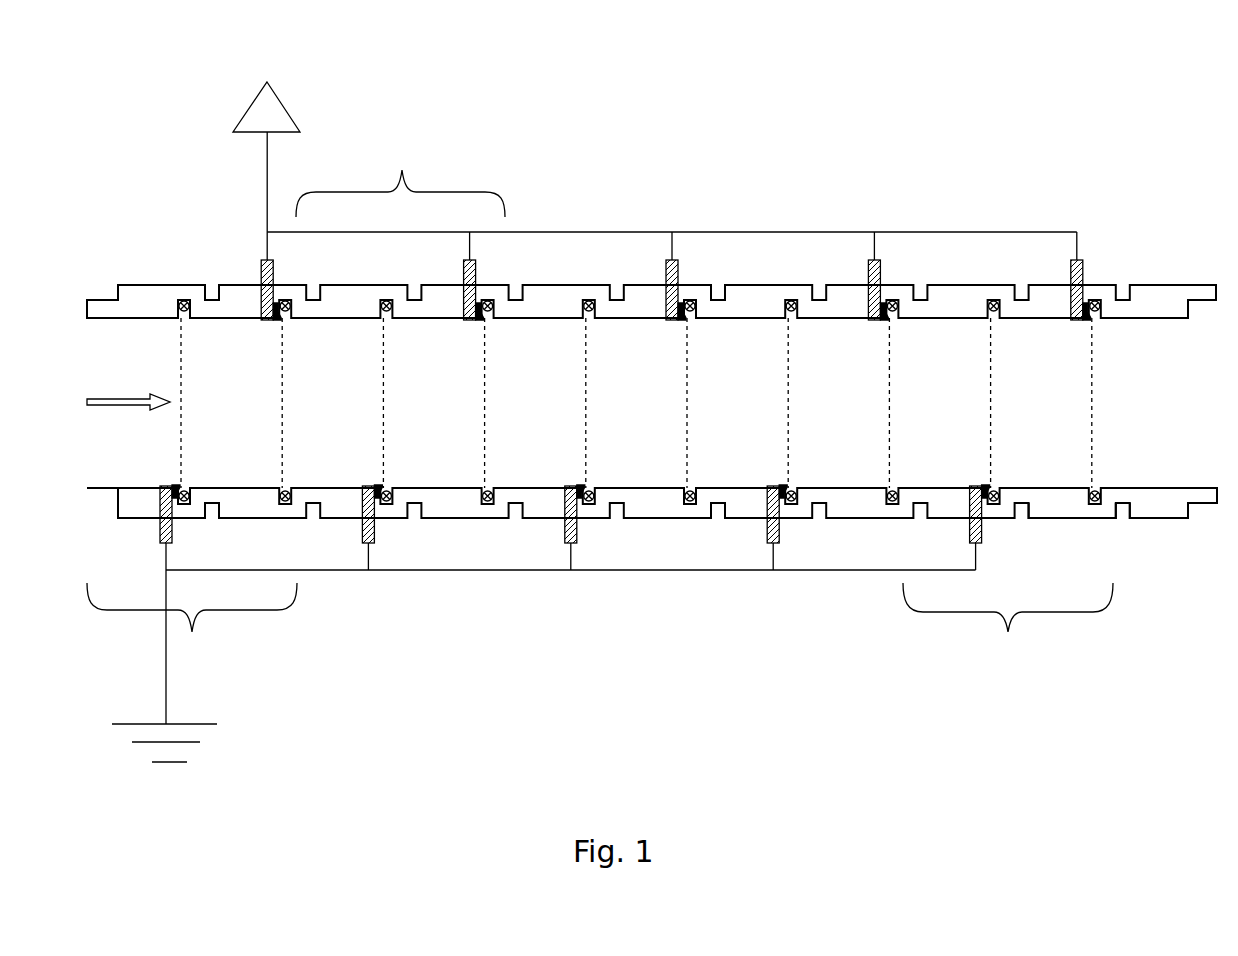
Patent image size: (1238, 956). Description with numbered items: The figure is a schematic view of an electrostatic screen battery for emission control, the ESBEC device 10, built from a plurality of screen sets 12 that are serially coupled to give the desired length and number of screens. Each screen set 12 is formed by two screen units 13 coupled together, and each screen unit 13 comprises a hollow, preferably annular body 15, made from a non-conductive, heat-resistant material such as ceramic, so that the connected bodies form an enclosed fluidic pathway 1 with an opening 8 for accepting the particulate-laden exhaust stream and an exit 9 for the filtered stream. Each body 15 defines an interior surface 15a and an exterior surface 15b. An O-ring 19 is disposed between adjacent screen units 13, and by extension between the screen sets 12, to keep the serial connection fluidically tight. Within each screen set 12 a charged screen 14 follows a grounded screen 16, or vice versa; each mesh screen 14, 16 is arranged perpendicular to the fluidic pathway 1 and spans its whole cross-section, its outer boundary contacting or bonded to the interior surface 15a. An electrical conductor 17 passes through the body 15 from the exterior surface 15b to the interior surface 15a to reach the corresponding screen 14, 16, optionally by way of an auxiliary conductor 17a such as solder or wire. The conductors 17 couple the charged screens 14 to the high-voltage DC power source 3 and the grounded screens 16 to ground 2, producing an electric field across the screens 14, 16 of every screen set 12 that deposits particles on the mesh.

The fluidic pathway 1 is at (115, 407).
The ground 2 is at (172, 765).
The high-voltage DC power source 3 is at (260, 128).
The opening 8 is at (83, 343).
The exit 9 is at (1208, 322).
The ESBEC device 10 is at (1083, 143).
The screen set 12 is at (600, 402).
The screen unit 13 is at (183, 265).
The charged screen 14 is at (283, 352).
The body 15 is at (150, 302).
The interior surface 15a is at (250, 488).
The exterior surface 15b is at (167, 283).
The grounded screen 16 is at (181, 348).
The electrical conductor 17 is at (160, 533).
The auxiliary conductor 17a is at (176, 488).
The O-ring 19 is at (180, 313).